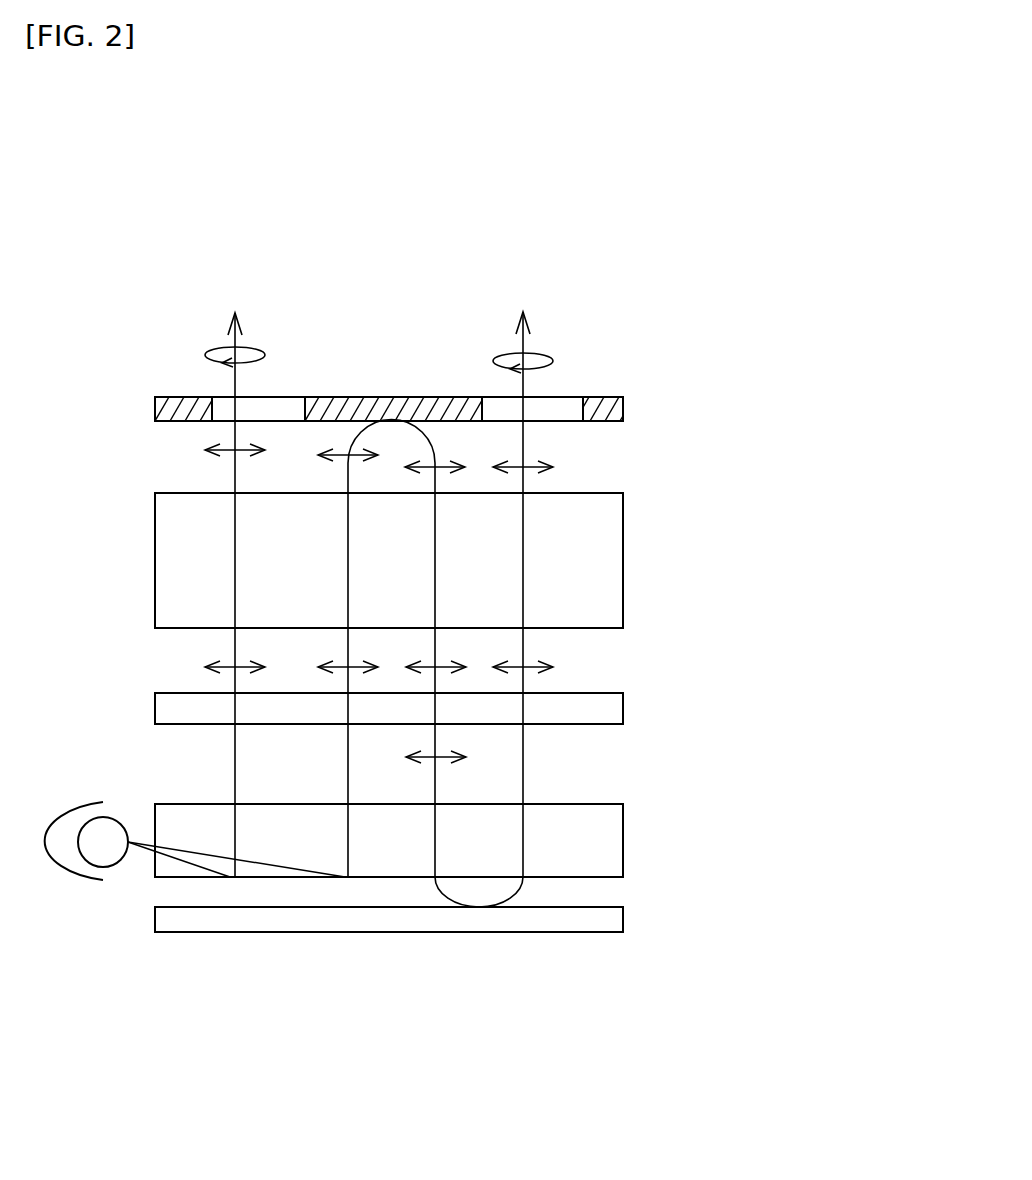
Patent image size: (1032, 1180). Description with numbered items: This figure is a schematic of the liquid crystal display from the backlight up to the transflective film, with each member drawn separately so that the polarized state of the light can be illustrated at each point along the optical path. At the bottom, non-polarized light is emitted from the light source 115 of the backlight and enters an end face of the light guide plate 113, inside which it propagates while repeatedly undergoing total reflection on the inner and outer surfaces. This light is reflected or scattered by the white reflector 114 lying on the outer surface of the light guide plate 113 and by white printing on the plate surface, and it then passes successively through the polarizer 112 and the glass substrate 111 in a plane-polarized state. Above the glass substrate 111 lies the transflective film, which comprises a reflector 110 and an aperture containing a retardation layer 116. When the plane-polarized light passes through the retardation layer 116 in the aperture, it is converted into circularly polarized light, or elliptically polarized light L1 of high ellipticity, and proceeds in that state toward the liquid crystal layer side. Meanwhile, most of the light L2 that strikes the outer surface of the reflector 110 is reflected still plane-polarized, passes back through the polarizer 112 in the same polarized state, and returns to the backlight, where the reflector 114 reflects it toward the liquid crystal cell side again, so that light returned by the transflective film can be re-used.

The reflector 110 is at (394, 349).
The retardation layer 116 is at (507, 344).
The glass substrate 111 is at (527, 568).
The polarizer 112 is at (504, 735).
The light guide plate 113 is at (535, 846).
The reflector 114 is at (389, 959).
The light source 115 is at (195, 915).
The elliptically polarized light L1 is at (184, 595).
The reflected light L2 is at (516, 609).